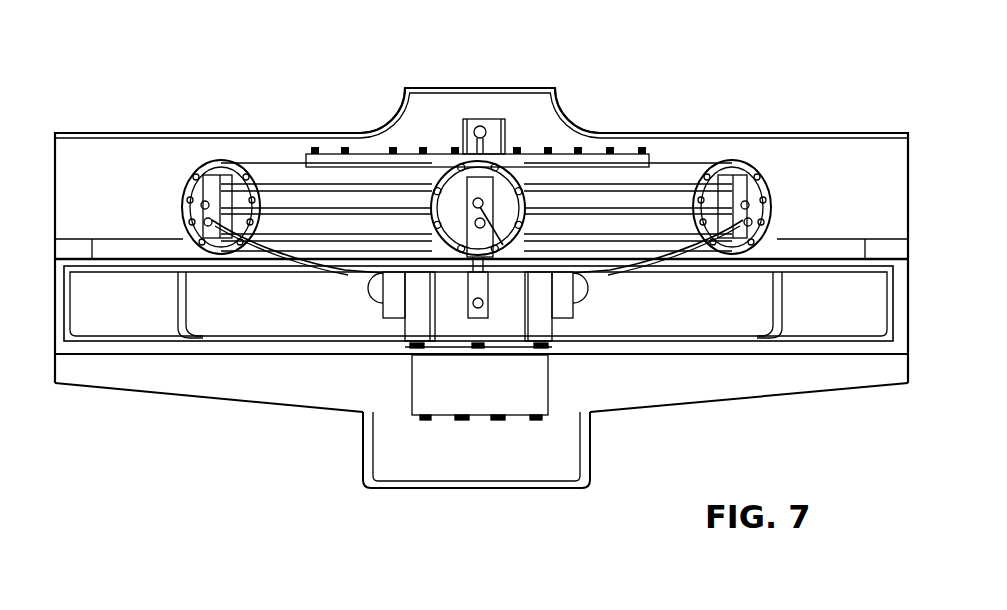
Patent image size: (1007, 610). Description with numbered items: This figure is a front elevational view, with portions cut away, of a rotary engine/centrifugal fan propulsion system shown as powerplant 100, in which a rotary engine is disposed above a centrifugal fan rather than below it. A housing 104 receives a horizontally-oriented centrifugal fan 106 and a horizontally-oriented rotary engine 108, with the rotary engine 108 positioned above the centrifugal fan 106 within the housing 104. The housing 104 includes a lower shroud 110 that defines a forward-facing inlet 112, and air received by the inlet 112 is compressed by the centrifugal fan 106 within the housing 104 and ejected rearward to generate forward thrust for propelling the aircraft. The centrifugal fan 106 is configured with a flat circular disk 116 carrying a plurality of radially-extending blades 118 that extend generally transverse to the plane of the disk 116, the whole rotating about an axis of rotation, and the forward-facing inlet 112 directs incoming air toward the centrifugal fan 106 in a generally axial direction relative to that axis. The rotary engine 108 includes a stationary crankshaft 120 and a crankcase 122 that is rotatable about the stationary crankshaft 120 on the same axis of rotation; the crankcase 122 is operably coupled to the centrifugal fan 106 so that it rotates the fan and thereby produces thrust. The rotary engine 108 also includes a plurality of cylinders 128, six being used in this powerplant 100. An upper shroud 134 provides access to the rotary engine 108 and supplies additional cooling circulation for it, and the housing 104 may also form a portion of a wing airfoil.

The powerplant 100 is at (862, 104).
The housing 104 is at (910, 158).
The centrifugal fan 106 is at (145, 335).
The rotary engine 108 is at (325, 153).
The lower shroud 110 is at (248, 398).
The forward-facing inlet 112 is at (372, 487).
The flat circular disk 116 is at (720, 273).
The radially-extending blades 118 is at (742, 327).
The stationary crankshaft 120 is at (487, 121).
The crankcase 122 is at (600, 154).
The cylinders 128 is at (243, 162).
The upper shroud 134 is at (742, 133).